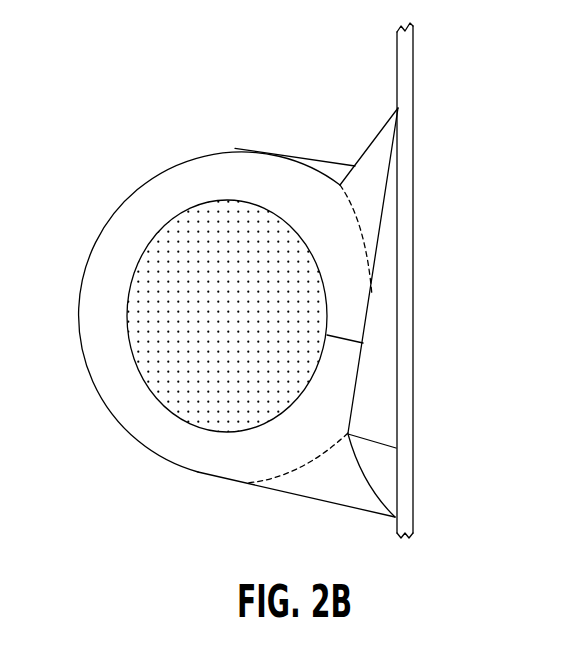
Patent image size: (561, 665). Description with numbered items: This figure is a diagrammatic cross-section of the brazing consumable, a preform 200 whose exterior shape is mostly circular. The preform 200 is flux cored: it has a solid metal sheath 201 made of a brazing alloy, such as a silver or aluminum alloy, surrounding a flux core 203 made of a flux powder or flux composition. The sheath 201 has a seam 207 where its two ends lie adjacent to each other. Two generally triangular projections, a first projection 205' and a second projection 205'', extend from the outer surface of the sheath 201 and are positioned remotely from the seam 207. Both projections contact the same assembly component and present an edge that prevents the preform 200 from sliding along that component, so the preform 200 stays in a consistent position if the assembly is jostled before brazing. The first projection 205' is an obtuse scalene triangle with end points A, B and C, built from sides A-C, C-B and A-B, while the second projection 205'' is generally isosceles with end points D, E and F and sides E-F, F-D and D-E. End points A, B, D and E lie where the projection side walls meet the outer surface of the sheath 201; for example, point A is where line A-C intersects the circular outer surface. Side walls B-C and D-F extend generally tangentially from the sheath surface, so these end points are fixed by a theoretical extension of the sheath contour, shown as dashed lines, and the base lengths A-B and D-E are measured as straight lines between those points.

The preform 200 is at (216, 82).
The sheath 201 is at (153, 203).
The flux core 203 is at (192, 343).
The triangular projection 205' is at (316, 126).
The triangular projection 205'' is at (297, 499).
The seam 207 is at (345, 343).
The end point A is at (340, 185).
The end point B is at (375, 298).
The end point C is at (398, 108).
The end point D is at (247, 482).
The end point E is at (348, 433).
The end point F is at (397, 517).